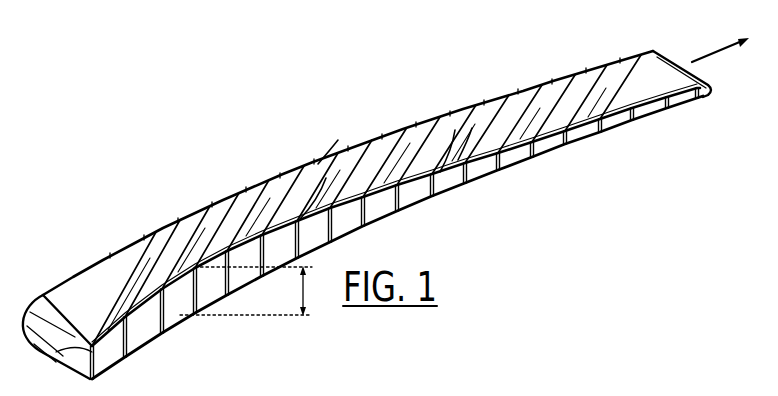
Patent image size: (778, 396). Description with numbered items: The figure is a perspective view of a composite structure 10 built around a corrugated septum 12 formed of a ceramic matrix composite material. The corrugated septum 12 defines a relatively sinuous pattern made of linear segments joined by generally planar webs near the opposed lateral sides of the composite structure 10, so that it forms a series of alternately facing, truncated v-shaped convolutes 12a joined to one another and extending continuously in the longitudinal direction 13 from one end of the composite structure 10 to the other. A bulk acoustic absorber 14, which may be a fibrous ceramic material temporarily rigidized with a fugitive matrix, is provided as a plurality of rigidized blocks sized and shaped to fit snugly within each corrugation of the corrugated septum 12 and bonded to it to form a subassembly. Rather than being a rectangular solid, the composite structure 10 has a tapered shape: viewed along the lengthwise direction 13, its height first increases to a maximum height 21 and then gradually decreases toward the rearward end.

The composite structure 10 is at (189, 140).
The corrugated septum 12 is at (82, 283).
The convolutes 12a is at (316, 162).
The longitudinal direction 13 is at (733, 56).
The bulk acoustic absorber 14 is at (160, 307).
The maximum height 21 is at (246, 291).